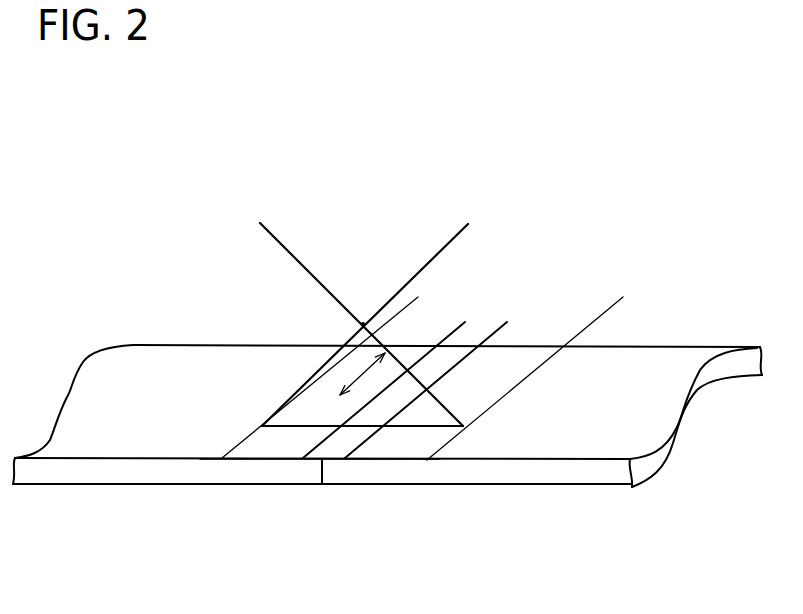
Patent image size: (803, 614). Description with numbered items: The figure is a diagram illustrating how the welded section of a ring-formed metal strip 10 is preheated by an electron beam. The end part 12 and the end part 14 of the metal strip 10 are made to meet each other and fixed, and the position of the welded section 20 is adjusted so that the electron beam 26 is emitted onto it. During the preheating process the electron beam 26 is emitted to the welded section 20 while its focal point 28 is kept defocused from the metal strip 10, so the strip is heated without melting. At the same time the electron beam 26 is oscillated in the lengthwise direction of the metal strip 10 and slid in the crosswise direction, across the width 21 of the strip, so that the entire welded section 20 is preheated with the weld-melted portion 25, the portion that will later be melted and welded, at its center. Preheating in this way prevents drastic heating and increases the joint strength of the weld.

The metal strip 10 is at (672, 367).
The end part 12 is at (320, 468).
The end part 14 is at (324, 475).
The welded section 20 is at (612, 306).
The width 21 is at (463, 457).
The weld-melted portion 25 is at (523, 333).
The electron beam 26 is at (382, 212).
The focal point 28 is at (358, 324).